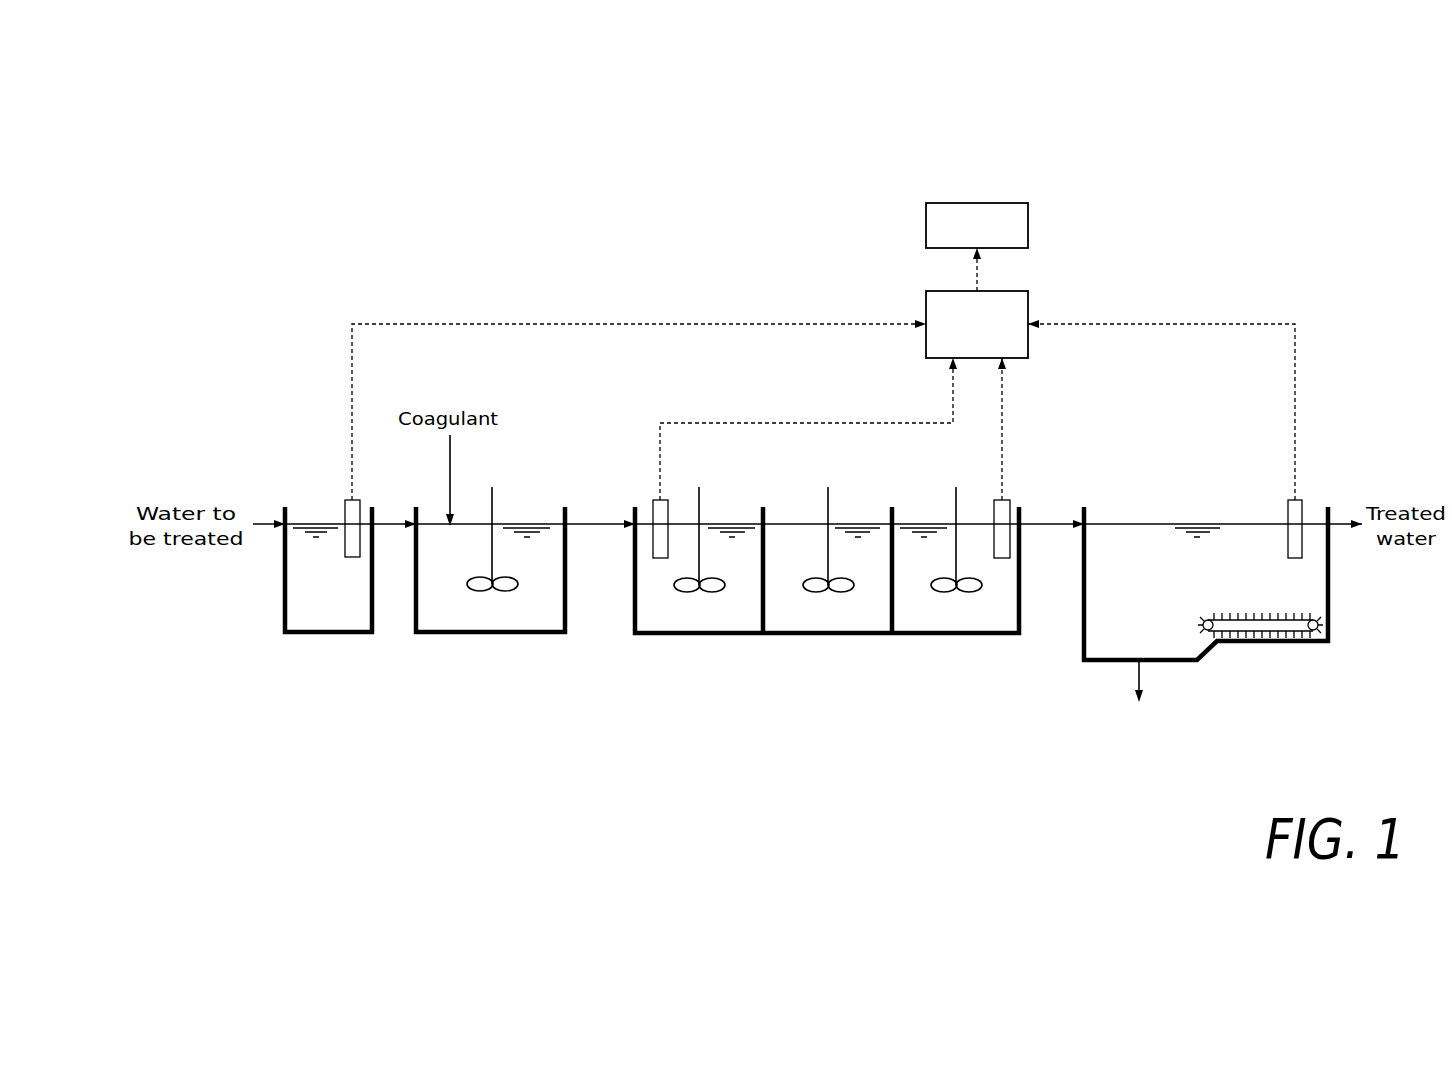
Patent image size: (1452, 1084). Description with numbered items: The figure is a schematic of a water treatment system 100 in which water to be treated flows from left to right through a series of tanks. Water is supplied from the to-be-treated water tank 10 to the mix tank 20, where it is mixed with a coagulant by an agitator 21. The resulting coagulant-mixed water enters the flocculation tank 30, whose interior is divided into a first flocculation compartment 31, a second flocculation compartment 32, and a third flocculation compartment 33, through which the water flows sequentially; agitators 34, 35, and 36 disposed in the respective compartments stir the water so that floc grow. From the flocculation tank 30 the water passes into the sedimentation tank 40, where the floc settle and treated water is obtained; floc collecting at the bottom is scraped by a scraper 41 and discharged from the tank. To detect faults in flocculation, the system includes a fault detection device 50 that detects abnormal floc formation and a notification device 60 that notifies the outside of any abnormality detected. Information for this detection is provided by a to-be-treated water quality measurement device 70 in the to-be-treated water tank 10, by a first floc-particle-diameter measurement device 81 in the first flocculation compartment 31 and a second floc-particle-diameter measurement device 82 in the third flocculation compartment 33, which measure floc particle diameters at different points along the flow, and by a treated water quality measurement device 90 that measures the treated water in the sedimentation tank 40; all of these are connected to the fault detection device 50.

The water treatment system 100 is at (1220, 200).
The to-be-treated water tank 10 is at (327, 634).
The mix tank 20 is at (490, 634).
The agitator 21 is at (492, 500).
The flocculation tank 30 is at (667, 699).
The first flocculation compartment 31 is at (697, 635).
The second flocculation compartment 32 is at (827, 635).
The third flocculation compartment 33 is at (952, 635).
The agitator 34 is at (700, 502).
The agitator 35 is at (826, 502).
The agitator 36 is at (954, 502).
The sedimentation tank 40 is at (1258, 643).
The scraper 41 is at (1320, 626).
The fault detection device 50 is at (1028, 292).
The notification device 60 is at (975, 203).
The to-be-treated water quality measurement device 70 is at (346, 500).
The first floc-particle-diameter measurement device 81 is at (654, 500).
The second floc-particle-diameter measurement device 82 is at (1010, 500).
The treated water quality measurement device 90 is at (1288, 503).